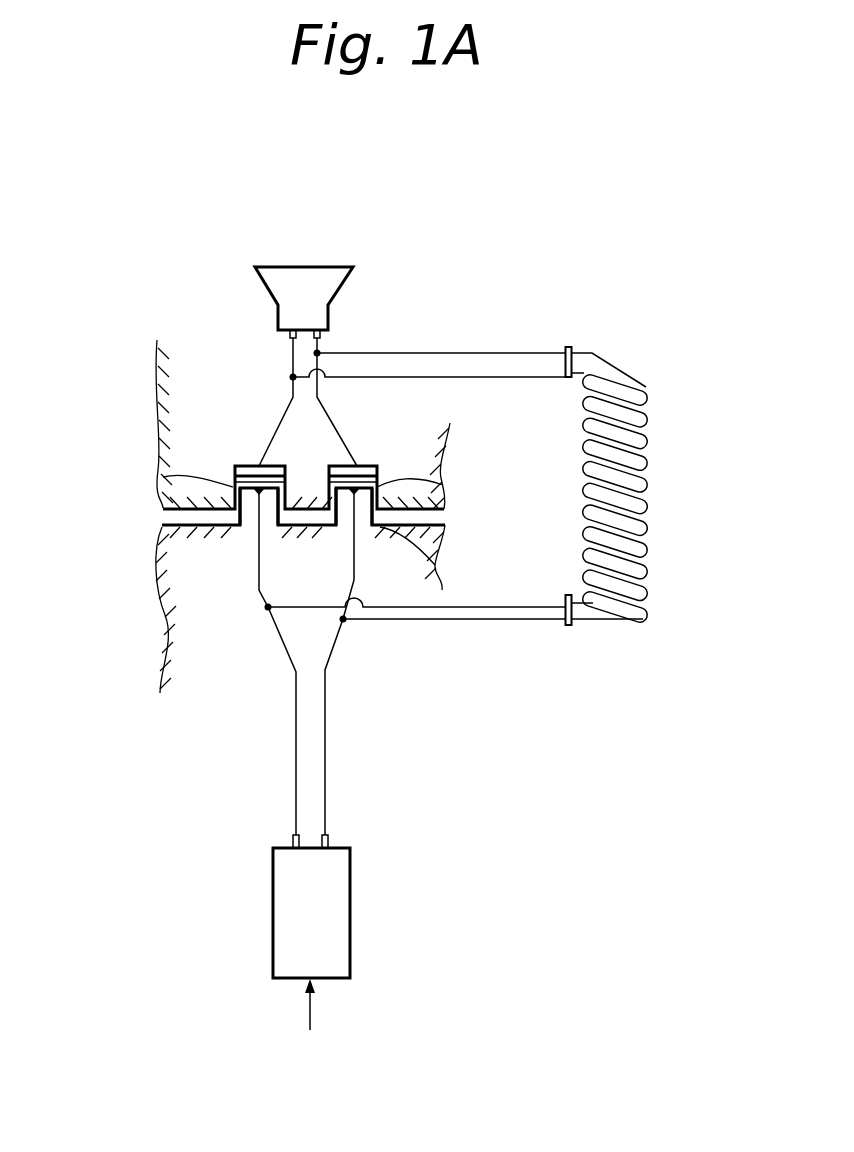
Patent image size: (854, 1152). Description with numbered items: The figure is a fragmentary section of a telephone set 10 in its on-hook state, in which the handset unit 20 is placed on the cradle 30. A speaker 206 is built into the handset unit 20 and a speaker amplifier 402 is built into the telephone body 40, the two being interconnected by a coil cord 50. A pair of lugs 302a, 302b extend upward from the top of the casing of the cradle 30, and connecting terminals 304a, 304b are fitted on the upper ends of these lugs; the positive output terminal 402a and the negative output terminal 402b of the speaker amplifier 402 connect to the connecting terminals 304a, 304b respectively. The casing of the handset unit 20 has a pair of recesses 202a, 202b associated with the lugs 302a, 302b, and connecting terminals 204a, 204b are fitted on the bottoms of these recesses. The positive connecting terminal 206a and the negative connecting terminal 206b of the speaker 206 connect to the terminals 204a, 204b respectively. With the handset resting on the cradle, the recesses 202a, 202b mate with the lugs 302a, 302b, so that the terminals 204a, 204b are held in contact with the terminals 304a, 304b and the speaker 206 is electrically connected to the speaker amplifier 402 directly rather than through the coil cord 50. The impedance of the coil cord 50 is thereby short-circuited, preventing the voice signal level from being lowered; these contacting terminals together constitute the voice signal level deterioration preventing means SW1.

The telephone set 10 is at (575, 263).
The handset unit 20 is at (150, 408).
The cradle 30 is at (158, 628).
The telephone body 40 is at (228, 930).
The coil cord 50 is at (651, 493).
The speaker 206 is at (358, 270).
The positive connecting terminal 206a is at (322, 336).
The negative connecting terminal 206b is at (290, 336).
The connecting terminal 204a is at (346, 466).
The connecting terminal 204b is at (237, 466).
The connecting terminal 304a is at (443, 480).
The connecting terminal 304b is at (165, 478).
The voice signal level deterioration preventing means SW1 is at (220, 520).
The lug 302a is at (440, 558).
The lug 302b is at (280, 510).
The recess 202a is at (340, 498).
The recess 202b is at (240, 500).
The speaker amplifier 402 is at (352, 920).
The positive output terminal 402a is at (330, 840).
The negative output terminal 402b is at (290, 840).